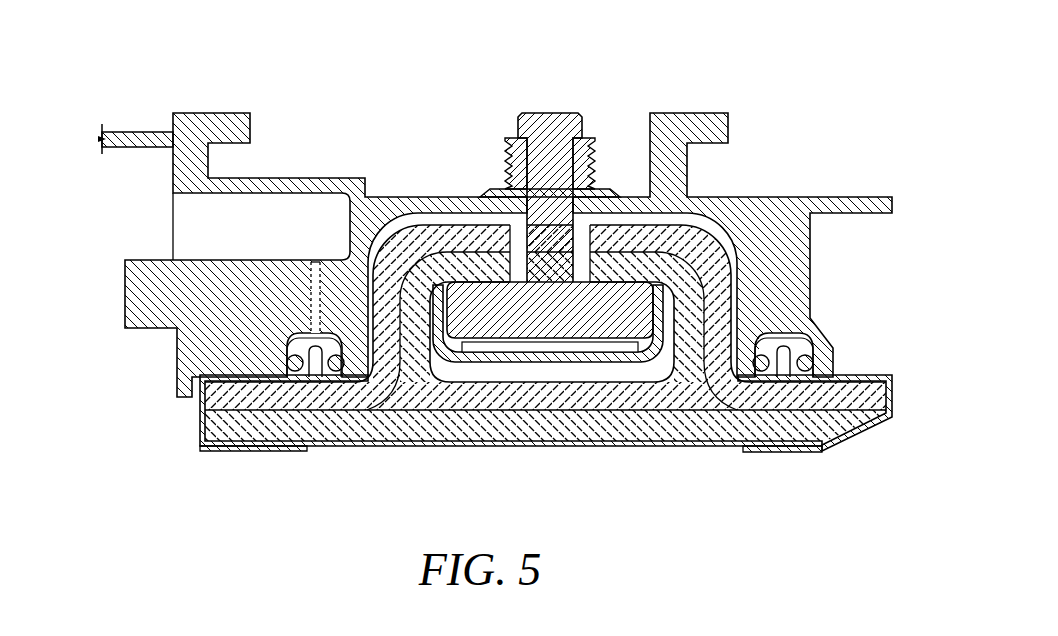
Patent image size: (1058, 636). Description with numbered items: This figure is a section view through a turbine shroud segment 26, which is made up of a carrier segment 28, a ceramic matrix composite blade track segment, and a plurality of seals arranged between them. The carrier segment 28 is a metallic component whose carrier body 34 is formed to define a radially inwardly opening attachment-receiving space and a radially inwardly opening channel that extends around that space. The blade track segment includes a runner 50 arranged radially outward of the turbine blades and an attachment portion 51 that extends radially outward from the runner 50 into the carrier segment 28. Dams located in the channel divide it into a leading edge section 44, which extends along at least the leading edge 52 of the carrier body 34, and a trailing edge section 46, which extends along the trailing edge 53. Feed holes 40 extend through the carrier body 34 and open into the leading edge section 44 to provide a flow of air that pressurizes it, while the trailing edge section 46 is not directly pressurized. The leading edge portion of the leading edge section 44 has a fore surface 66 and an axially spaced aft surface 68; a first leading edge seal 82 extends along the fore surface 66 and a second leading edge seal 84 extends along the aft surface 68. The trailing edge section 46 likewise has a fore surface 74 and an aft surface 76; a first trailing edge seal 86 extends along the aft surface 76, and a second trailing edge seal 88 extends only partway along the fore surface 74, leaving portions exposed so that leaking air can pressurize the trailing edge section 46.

The turbine shroud segment 26 is at (286, 105).
The carrier segment 28 is at (397, 162).
The carrier body 34 is at (452, 192).
The feed holes 40 is at (316, 259).
The leading edge section 44 is at (283, 340).
The trailing edge section 46 is at (798, 317).
The runner 50 is at (597, 449).
The attachment portion 51 is at (690, 226).
The leading edge 52 is at (193, 411).
The trailing edge 53 is at (895, 405).
The fore surface 66 is at (313, 358).
The aft surface 68 is at (322, 358).
The fore surface 74 is at (782, 358).
The aft surface 76 is at (788, 358).
The first leading edge seal 82 is at (282, 361).
The second leading edge seal 84 is at (349, 346).
The first trailing edge seal 86 is at (816, 360).
The second trailing edge seal 88 is at (750, 353).